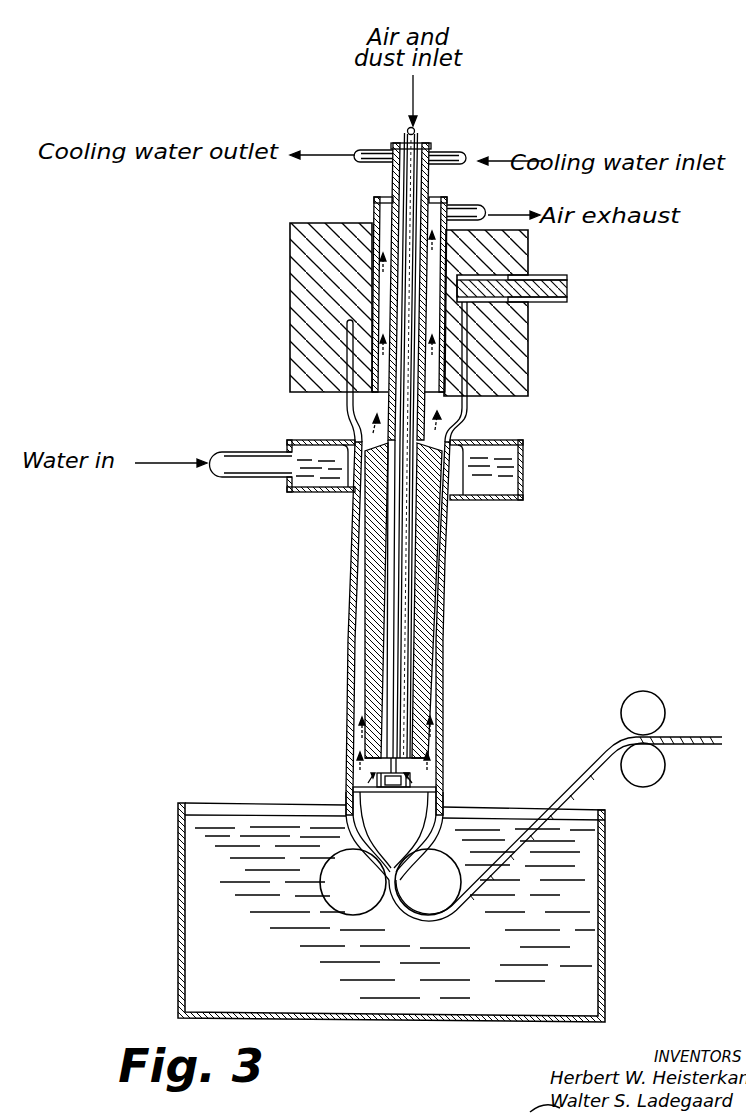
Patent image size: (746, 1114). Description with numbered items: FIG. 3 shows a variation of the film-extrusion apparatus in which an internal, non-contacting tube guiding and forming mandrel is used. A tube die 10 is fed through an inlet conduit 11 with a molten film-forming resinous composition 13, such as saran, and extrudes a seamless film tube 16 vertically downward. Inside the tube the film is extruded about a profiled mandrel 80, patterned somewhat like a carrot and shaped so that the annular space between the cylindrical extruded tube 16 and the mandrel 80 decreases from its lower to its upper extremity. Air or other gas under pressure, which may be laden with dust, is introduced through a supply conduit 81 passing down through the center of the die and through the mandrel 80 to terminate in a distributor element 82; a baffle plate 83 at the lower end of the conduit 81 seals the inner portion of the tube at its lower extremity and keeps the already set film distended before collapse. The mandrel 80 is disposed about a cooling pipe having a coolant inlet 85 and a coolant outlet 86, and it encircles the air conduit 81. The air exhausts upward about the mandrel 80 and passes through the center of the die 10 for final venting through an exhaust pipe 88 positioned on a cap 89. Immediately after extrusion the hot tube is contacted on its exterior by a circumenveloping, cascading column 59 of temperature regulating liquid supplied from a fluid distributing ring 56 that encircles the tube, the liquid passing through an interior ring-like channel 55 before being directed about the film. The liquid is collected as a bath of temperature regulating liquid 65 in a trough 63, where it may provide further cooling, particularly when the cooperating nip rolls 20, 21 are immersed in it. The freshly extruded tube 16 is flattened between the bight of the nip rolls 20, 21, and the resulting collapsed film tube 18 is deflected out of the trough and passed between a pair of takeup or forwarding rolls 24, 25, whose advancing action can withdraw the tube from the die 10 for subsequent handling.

The tube die 10 is at (297, 260).
The inlet conduit 11 is at (550, 277).
The molten resinous composition 13 is at (348, 326).
The freshly extruded film tube 16 is at (458, 428).
The collapsed film tube 18 is at (580, 789).
The nip roll 20 is at (353, 882).
The nip roll 21 is at (428, 882).
The takeup roll 24 is at (651, 704).
The takeup roll 25 is at (652, 778).
The ring-like channel 55 is at (303, 448).
The fluid distributing ring 56 is at (509, 440).
The cascading column of temperature regulating liquid 59 is at (354, 580).
The trough 63 is at (396, 1024).
The collected temperature regulating liquid 65 is at (395, 912).
The profiled carrot mandrel 80 is at (437, 557).
The air supply conduit 81 is at (416, 132).
The distributor element 82 is at (408, 780).
The baffle plate 83 is at (355, 791).
The coolant inlet 85 is at (440, 152).
The coolant outlet 86 is at (376, 150).
The exhaust pipe 88 is at (463, 205).
The cap 89 is at (375, 199).